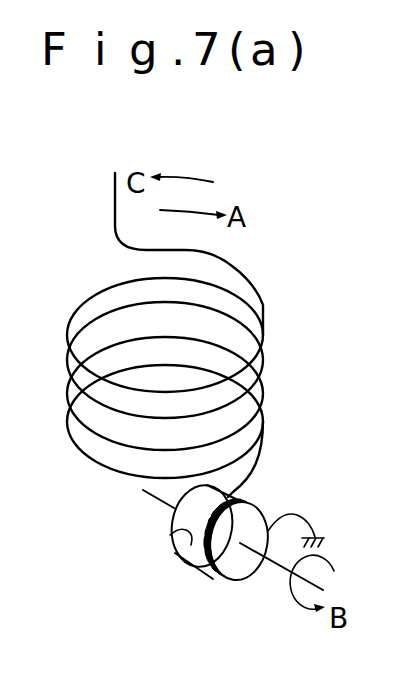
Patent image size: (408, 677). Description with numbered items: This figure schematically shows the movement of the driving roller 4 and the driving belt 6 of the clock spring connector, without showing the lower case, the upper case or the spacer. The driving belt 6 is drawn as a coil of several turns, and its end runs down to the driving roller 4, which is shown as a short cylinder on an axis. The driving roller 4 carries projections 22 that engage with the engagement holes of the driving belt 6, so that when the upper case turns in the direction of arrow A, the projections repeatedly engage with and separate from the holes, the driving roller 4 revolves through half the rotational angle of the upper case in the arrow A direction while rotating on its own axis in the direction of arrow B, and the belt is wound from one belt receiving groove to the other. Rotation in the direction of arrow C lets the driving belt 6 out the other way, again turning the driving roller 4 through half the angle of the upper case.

The driving belt 6 is at (265, 310).
The driving roller 4 is at (232, 557).
The projections 22 is at (170, 535).